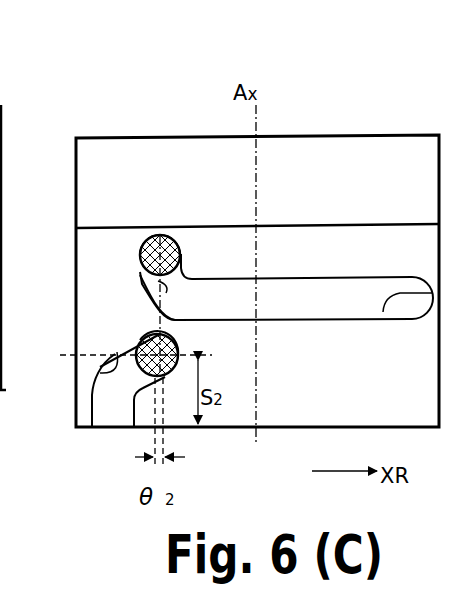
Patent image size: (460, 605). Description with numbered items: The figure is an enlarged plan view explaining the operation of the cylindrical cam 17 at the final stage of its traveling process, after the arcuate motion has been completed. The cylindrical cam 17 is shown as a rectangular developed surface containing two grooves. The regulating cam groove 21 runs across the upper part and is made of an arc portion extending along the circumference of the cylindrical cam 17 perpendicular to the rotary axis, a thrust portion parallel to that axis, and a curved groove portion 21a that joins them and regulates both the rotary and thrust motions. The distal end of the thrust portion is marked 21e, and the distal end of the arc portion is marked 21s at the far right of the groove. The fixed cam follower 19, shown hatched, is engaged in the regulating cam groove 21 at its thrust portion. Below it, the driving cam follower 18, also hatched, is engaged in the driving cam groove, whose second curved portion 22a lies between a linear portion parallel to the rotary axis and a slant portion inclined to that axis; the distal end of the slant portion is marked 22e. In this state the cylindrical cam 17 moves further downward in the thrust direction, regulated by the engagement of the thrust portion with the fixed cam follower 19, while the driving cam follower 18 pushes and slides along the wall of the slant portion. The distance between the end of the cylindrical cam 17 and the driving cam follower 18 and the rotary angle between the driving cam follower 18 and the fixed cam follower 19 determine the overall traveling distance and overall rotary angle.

The cylindrical cam 17 is at (281, 27).
The driving cam follower 18 is at (142, 338).
The fixed cam follower 19 is at (165, 235).
The regulating cam groove 21 is at (294, 284).
The curved groove portion 21a is at (140, 278).
The distal end of the thrust portion 21e is at (148, 238).
The distal end of the arc portion 21s is at (383, 312).
The second curved portion 22a is at (118, 356).
The distal end of the slant portion 22e is at (178, 355).